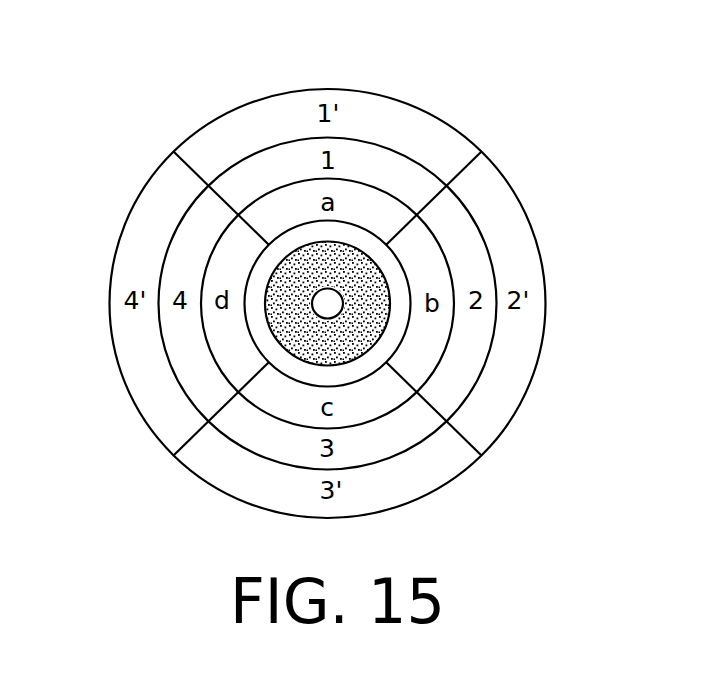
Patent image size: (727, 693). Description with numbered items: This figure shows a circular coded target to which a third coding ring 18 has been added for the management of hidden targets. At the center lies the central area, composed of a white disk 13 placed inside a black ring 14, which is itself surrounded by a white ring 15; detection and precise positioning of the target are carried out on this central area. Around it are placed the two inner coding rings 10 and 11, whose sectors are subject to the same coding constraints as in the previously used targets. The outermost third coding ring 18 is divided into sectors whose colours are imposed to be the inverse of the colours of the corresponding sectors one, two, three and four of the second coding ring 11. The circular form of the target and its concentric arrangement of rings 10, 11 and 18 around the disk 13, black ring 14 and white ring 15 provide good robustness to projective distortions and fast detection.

The coding ring 10 is at (422, 268).
The coding ring 11 is at (475, 338).
The white disk 13 is at (322, 300).
The black ring 14 is at (297, 253).
The white ring 15 is at (357, 243).
The third coding ring 18 is at (500, 402).